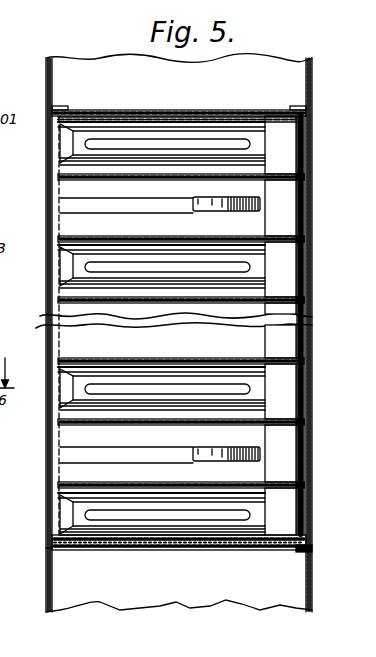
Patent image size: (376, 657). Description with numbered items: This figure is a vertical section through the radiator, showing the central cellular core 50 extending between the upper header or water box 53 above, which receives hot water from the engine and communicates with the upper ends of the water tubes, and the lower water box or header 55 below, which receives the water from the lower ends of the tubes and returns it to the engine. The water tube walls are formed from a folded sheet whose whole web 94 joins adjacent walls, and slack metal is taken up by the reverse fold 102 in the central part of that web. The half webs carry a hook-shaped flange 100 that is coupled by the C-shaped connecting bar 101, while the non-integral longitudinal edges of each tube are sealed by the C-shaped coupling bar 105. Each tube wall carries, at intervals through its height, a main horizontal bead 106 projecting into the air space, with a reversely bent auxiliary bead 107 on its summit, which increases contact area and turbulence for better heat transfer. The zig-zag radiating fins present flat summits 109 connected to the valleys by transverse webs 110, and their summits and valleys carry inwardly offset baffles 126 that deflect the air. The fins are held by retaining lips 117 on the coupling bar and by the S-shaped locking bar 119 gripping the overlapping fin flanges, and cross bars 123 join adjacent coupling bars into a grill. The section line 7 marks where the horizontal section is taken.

The section line 7- 7 is at (126, 94).
The central cellular core 50 is at (325, 335).
The upper header or water box 53 is at (179, 71).
The lower water box or header 55 is at (179, 591).
The whole web 94 is at (236, 552).
The hook-shaped flange 100 is at (193, 109).
The coupling, sealing or connecting bar 101 is at (136, 109).
The reverse fold of whole web 102 is at (90, 550).
The coupling bar 105 is at (308, 193).
The main horizontal bead 106 is at (103, 160).
The auxiliary bead 107 is at (155, 156).
The flat summit 109 is at (226, 338).
The transverse web 110 is at (200, 186).
The retaining lip 117 is at (292, 252).
The locking bar 119 is at (50, 324).
The transverse web or cross bar 123 is at (300, 176).
The baffle or deflecting member 126 is at (114, 213).